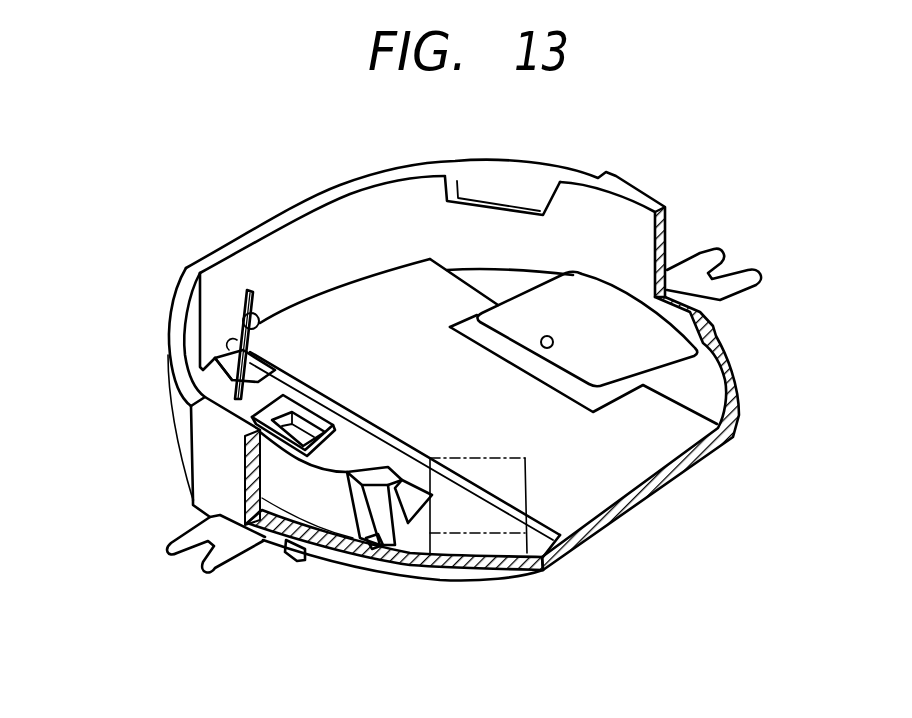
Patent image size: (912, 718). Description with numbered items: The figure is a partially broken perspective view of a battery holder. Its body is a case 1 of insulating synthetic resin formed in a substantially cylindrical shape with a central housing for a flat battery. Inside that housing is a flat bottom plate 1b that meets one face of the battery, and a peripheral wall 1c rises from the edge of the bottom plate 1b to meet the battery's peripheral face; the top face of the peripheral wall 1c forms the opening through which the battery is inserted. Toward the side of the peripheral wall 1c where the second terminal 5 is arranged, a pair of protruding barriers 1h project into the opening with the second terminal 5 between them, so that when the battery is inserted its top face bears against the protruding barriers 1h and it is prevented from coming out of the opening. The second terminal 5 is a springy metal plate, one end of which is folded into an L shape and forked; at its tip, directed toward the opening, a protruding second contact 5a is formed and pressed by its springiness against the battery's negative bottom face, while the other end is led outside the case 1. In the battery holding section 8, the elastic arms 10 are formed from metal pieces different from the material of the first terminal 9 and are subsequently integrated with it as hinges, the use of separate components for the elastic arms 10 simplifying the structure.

The case 1 is at (633, 183).
The bottom plate 1b is at (617, 473).
The peripheral wall 1c is at (328, 244).
The protruding barriers 1h is at (515, 187).
The second terminal 5 is at (686, 296).
The second contact 5a is at (555, 342).
The battery holding section 8 is at (317, 503).
The first terminal 9 is at (235, 336).
The elastic arms 10 is at (366, 553).